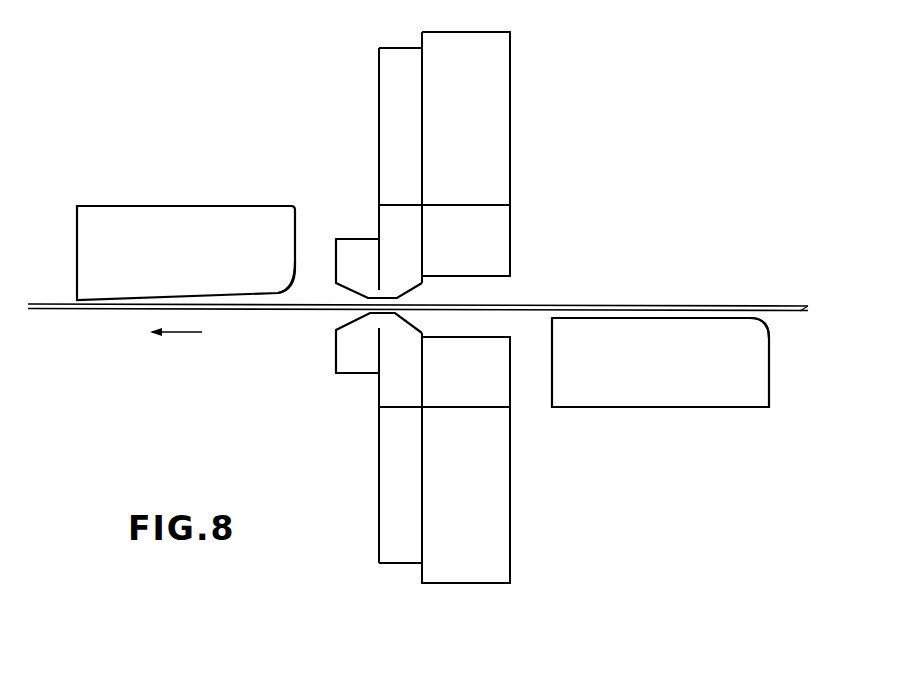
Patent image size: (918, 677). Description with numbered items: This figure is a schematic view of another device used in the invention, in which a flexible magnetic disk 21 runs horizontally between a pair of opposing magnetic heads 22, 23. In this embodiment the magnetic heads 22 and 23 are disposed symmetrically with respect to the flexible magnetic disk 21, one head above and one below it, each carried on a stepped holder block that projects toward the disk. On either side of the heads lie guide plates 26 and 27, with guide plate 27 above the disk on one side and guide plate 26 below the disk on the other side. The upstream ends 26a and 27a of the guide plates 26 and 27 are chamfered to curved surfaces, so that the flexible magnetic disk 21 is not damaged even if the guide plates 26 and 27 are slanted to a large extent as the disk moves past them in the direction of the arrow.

The flexible magnetic disk 21 is at (553, 305).
The magnetic head 22 is at (370, 325).
The magnetic head 23 is at (368, 287).
The guide plate 26 is at (685, 397).
The upstream end 26a is at (767, 323).
The guide plate 27 is at (193, 217).
The upstream end 27a is at (293, 287).